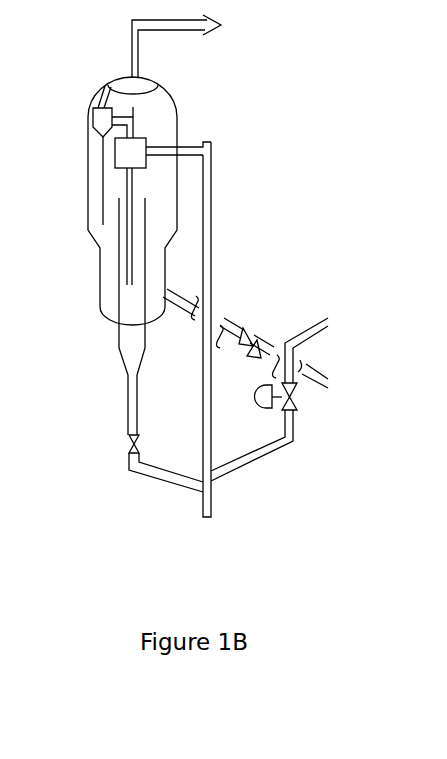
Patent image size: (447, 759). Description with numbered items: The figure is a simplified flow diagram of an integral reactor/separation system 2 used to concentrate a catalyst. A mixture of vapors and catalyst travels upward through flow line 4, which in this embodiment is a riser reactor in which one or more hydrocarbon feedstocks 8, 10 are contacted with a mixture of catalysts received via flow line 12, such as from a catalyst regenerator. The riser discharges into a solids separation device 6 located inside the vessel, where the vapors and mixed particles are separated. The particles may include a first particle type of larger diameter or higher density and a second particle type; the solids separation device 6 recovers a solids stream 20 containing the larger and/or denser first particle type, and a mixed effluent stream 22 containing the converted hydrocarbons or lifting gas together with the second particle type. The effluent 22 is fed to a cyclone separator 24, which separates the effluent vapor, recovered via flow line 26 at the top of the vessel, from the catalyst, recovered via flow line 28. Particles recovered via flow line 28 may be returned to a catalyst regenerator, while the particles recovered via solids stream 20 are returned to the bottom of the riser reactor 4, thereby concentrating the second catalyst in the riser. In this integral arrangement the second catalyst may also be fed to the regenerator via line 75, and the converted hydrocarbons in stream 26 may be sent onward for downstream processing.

The separation system 2 is at (87, 212).
The flow line 4 is at (207, 262).
The solids separation device 6 is at (163, 211).
The hydrocarbon feedstock 8 is at (203, 463).
The hydrocarbon feedstock 10 is at (212, 438).
The flow line 12 is at (291, 364).
The solids stream 20 is at (140, 316).
The mixed effluent stream 22 is at (132, 119).
The cyclone separator 24 is at (88, 111).
The flow line 26 is at (176, 40).
The flow line 28 is at (102, 160).
The flow line 75 is at (221, 334).